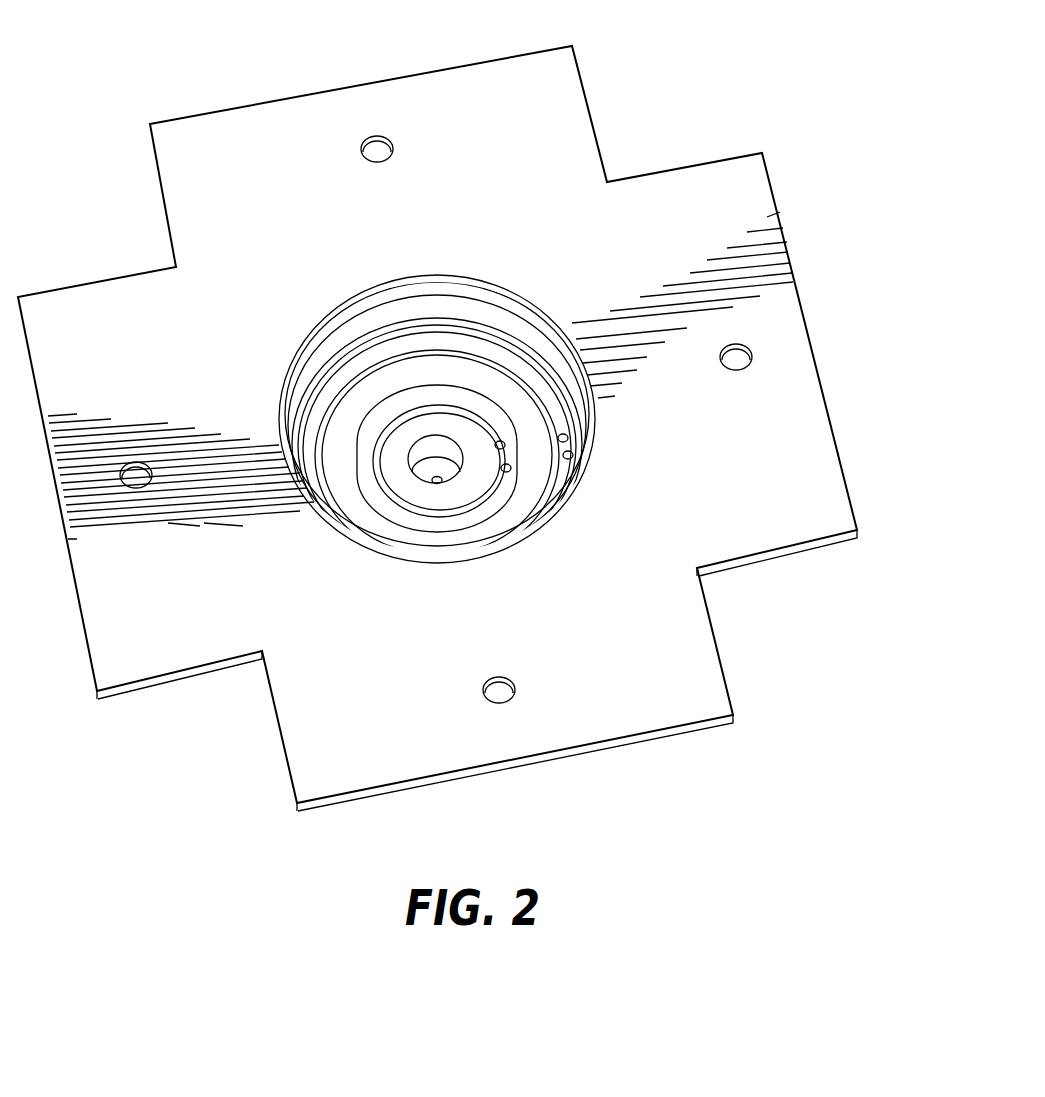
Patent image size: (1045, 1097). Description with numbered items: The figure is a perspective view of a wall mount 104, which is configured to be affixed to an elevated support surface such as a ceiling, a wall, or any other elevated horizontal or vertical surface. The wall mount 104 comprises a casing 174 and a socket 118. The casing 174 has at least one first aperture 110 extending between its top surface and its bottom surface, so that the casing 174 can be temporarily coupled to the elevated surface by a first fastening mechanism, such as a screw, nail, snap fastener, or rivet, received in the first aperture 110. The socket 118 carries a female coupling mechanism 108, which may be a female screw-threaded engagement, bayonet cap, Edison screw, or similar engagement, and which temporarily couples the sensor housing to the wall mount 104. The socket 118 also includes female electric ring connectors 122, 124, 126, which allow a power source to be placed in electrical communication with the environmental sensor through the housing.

The wall mount 104 is at (168, 50).
The female coupling mechanism 108 is at (322, 350).
The first aperture 110 is at (376, 146).
The socket 118 is at (503, 518).
The female electric ring connector 122 is at (572, 443).
The female electric ring connector 124 is at (500, 440).
The female electric ring connector 126 is at (418, 477).
The casing 174 is at (700, 222).